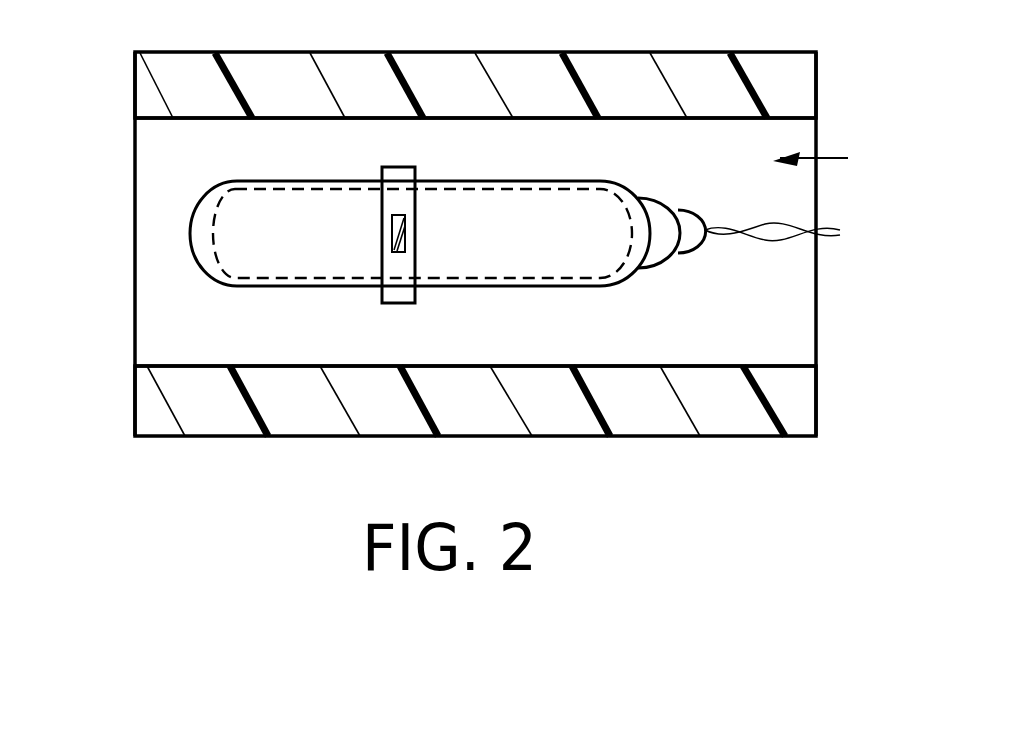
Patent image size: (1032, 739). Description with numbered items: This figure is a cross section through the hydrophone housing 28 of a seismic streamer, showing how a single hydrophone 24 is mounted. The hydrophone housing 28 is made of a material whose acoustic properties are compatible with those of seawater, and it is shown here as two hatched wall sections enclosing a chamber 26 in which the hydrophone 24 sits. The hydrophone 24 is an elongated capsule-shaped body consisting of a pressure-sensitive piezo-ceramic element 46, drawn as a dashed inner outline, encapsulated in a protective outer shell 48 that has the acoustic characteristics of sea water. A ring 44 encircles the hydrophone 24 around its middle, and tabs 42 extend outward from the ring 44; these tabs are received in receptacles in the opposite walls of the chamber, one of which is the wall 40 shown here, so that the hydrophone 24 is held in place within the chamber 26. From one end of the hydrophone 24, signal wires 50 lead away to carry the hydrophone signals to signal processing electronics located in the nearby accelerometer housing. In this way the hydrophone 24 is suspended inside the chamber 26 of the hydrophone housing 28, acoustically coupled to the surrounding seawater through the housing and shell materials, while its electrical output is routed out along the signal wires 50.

The hydrophone 24 is at (400, 250).
The chamber 26 is at (830, 163).
The hydrophone housing 28 is at (808, 88).
The wall 40 is at (153, 188).
The tab 42 is at (405, 250).
The ring 44 is at (407, 177).
The piezo-ceramic element 46 is at (605, 262).
The protective outer shell 48 is at (290, 181).
The signal wires 50 is at (852, 218).